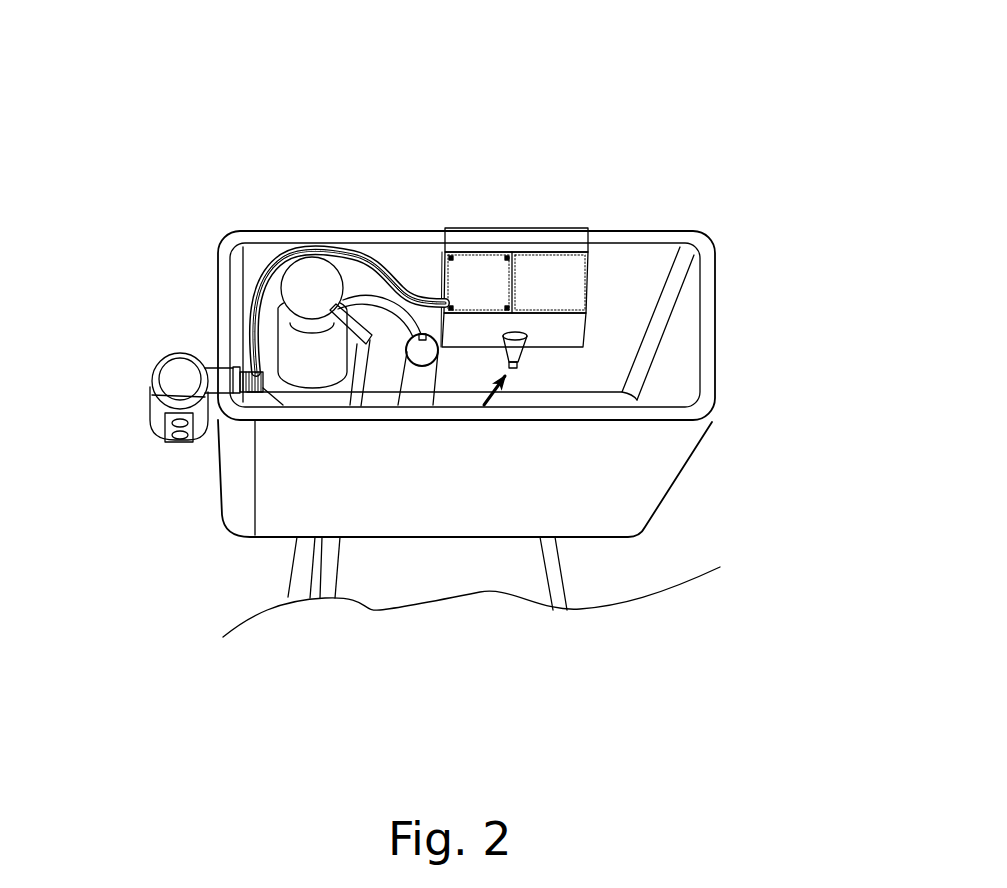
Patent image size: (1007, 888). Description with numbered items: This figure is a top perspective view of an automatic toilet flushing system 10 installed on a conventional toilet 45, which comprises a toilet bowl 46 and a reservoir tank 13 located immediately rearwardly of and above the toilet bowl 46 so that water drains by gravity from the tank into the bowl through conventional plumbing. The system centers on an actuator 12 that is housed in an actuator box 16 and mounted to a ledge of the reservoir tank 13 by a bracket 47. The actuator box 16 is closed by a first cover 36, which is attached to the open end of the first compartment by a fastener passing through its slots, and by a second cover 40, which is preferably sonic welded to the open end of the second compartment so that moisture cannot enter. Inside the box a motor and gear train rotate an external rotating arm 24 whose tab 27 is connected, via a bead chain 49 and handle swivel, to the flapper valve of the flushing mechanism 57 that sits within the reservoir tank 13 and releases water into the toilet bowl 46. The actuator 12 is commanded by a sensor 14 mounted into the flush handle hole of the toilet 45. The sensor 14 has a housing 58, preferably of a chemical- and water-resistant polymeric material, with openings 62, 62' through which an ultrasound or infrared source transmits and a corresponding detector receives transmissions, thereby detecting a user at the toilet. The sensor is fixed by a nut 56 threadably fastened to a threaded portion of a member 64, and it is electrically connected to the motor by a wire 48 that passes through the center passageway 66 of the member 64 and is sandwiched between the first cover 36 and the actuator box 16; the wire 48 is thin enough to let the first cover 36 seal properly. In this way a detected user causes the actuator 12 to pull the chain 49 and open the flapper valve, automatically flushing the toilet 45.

The automatic toilet flushing system 10 is at (202, 175).
The actuator 12 is at (600, 275).
The reservoir tank 13 is at (717, 395).
The sensor 14 is at (178, 455).
The actuator box 16 is at (590, 328).
The external rotating arm 24 is at (520, 352).
The tab 27 is at (523, 350).
The first cover 36 is at (553, 272).
The second cover 40 is at (475, 268).
The conventional toilet 45 is at (738, 182).
The toilet bowl 46 is at (353, 567).
The bracket 47 is at (573, 242).
The wire 48 is at (268, 345).
The bead chain 49 is at (509, 378).
The nut 56 is at (240, 378).
The flushing mechanism 57 is at (408, 383).
The housing 58 is at (143, 413).
The opening 62 is at (128, 481).
The opening 62' is at (135, 453).
The member 64 is at (250, 368).
The center passageway 66 is at (283, 405).